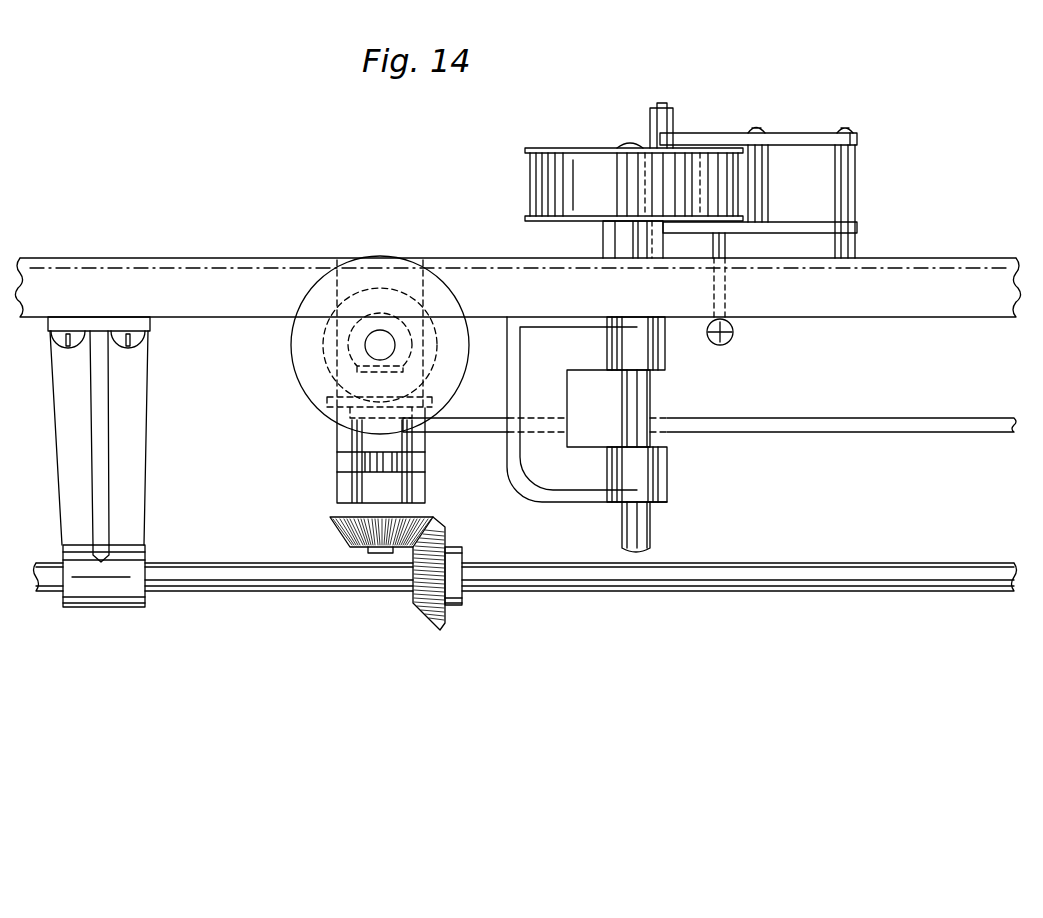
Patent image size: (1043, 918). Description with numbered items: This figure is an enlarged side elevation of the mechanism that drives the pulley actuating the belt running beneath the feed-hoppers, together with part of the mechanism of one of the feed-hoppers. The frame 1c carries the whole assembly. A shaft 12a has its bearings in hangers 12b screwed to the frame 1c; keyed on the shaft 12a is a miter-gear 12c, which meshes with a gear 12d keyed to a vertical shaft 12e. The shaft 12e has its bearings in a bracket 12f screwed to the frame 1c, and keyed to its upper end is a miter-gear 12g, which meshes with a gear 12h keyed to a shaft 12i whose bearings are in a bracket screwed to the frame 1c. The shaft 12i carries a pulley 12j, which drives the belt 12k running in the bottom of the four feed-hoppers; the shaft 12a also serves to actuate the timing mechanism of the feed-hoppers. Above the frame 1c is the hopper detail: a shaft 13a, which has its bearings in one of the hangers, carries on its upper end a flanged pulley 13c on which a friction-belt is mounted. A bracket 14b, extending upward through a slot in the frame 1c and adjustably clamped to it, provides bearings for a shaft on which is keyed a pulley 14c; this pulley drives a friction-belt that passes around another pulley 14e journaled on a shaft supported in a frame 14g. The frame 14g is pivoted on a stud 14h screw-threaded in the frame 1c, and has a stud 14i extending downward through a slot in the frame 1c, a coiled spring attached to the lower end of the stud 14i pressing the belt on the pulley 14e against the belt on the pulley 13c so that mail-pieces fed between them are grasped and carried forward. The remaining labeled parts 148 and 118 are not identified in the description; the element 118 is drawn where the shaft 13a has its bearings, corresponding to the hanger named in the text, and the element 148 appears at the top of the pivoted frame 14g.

The frame 1c is at (938, 272).
The shaft 12a is at (202, 582).
The hangers 12b is at (127, 452).
The miter-gear 12c is at (462, 605).
The gear 12d is at (333, 527).
The shaft 12e is at (363, 464).
The bracket 12f is at (417, 462).
The miter-gear 12g is at (347, 387).
The gear 12h is at (418, 355).
The shaft 12i is at (381, 343).
The pulley 12j is at (446, 386).
The belt 12k is at (742, 421).
The shaft 13a is at (638, 396).
The flanged pulley 13c is at (580, 158).
The bracket 14b is at (664, 114).
The pulley 14c is at (718, 251).
The pulley 14e is at (678, 156).
The frame 14g is at (734, 334).
The stud 14h is at (845, 192).
The stud 14i is at (760, 227).
The top plate 148 is at (793, 140).
The bearing bracket 118 is at (652, 481).